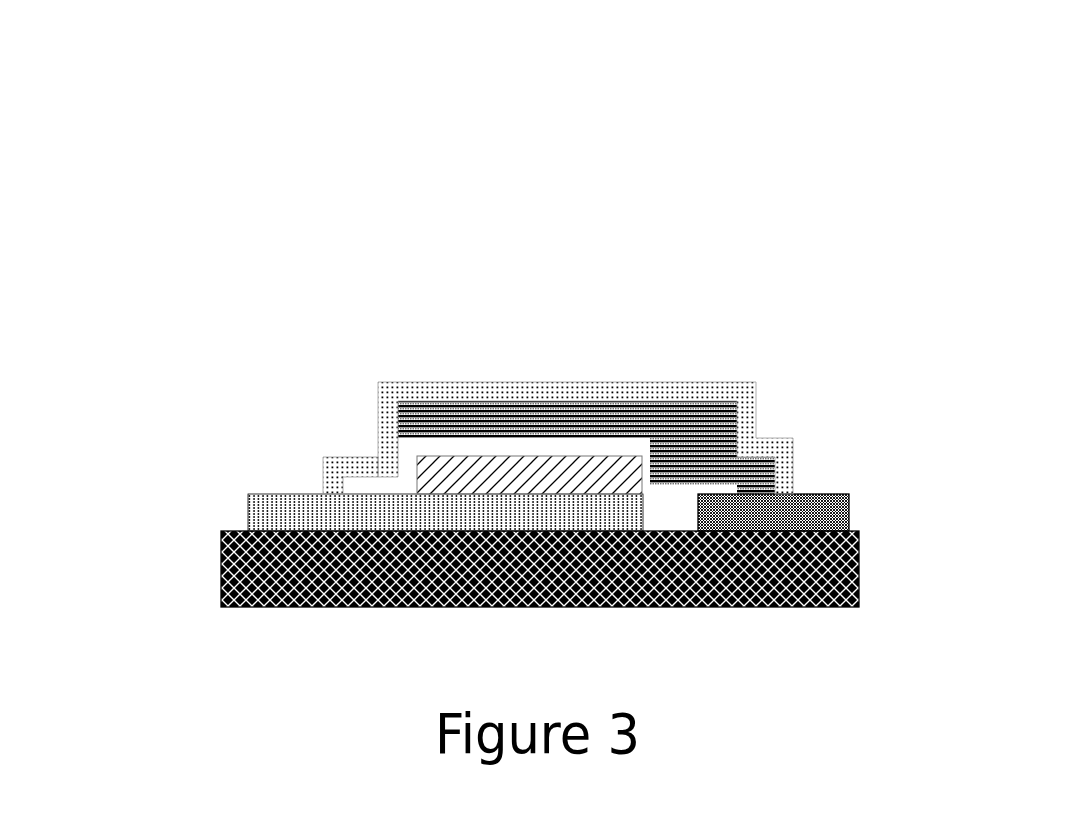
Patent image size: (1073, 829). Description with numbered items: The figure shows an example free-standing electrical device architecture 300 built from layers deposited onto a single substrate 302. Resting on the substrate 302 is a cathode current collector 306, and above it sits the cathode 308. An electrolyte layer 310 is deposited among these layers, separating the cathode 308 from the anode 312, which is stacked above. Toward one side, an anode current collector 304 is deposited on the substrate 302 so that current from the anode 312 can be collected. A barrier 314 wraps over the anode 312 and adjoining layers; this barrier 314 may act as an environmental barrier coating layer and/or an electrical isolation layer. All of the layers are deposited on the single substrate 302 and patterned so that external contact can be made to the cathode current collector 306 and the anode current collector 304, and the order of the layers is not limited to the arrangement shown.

The free-standing electrical device architecture 300 is at (960, 112).
The substrate 302 is at (556, 578).
The anode current collector 304 is at (850, 510).
The cathode current collector 306 is at (248, 512).
The cathode 308 is at (548, 485).
The electrolyte layer 310 is at (398, 485).
The anode 312 is at (583, 430).
The barrier 314 is at (698, 382).